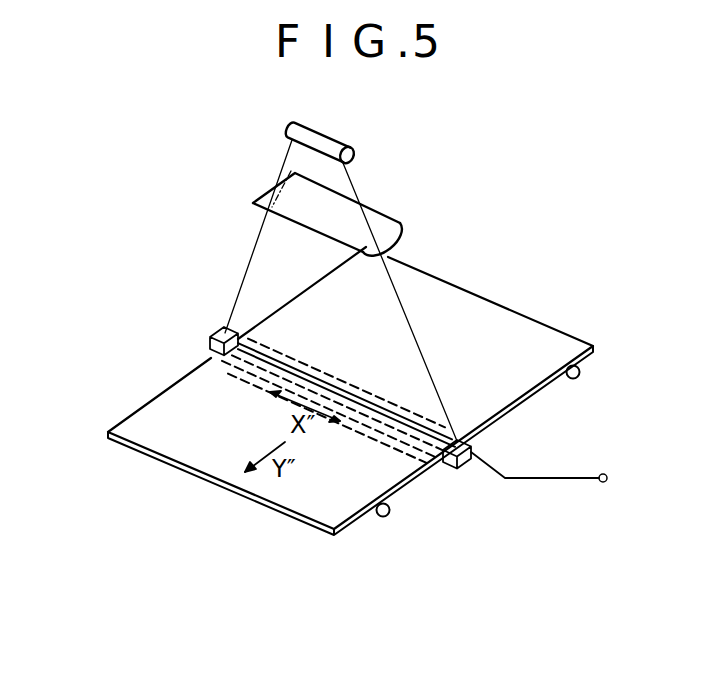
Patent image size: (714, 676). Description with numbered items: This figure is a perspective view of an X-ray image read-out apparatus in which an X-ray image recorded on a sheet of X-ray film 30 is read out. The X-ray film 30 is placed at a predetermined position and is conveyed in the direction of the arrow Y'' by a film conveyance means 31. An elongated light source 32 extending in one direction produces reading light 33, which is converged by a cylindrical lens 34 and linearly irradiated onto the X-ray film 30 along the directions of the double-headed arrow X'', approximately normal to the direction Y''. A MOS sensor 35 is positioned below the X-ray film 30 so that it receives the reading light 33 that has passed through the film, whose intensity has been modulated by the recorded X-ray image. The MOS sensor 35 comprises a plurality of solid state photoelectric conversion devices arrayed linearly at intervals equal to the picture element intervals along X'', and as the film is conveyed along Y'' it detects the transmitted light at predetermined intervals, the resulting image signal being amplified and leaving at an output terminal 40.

The X-ray film 30 is at (563, 332).
The film conveyance means 31 is at (580, 373).
The elongated light source 32 is at (344, 150).
The reading light 33 is at (347, 183).
The cylindrical lens 34 is at (397, 218).
The MOS sensor 35 is at (475, 450).
The output terminal 40 is at (605, 483).